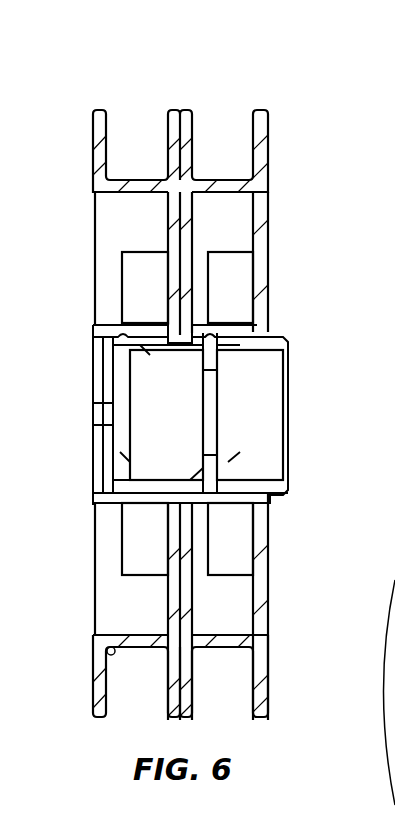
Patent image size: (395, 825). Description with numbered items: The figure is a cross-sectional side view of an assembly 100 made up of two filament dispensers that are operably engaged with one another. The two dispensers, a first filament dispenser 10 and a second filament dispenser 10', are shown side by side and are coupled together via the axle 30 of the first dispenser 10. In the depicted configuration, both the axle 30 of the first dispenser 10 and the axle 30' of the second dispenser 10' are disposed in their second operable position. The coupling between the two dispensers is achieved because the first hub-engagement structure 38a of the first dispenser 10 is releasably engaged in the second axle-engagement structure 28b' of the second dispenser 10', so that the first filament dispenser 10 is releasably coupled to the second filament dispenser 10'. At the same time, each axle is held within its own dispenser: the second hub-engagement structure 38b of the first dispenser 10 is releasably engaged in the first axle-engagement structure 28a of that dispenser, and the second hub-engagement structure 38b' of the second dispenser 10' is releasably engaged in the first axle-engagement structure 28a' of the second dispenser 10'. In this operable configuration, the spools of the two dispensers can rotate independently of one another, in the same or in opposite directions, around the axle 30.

The assembly 100 is at (188, 62).
The filament dispenser 10 is at (136, 399).
The filament dispenser 10' is at (224, 397).
The first axle-engagement structure 28a is at (106, 405).
The first axle-engagement structure 28a' is at (243, 318).
The second axle-engagement structure 28b' is at (206, 379).
The first hub-engagement structure 38a is at (212, 345).
The second hub-engagement structure 38b is at (87, 412).
The second hub-engagement structure 38b' is at (280, 412).
The axle 30 is at (137, 413).
The axle 30' is at (272, 413).